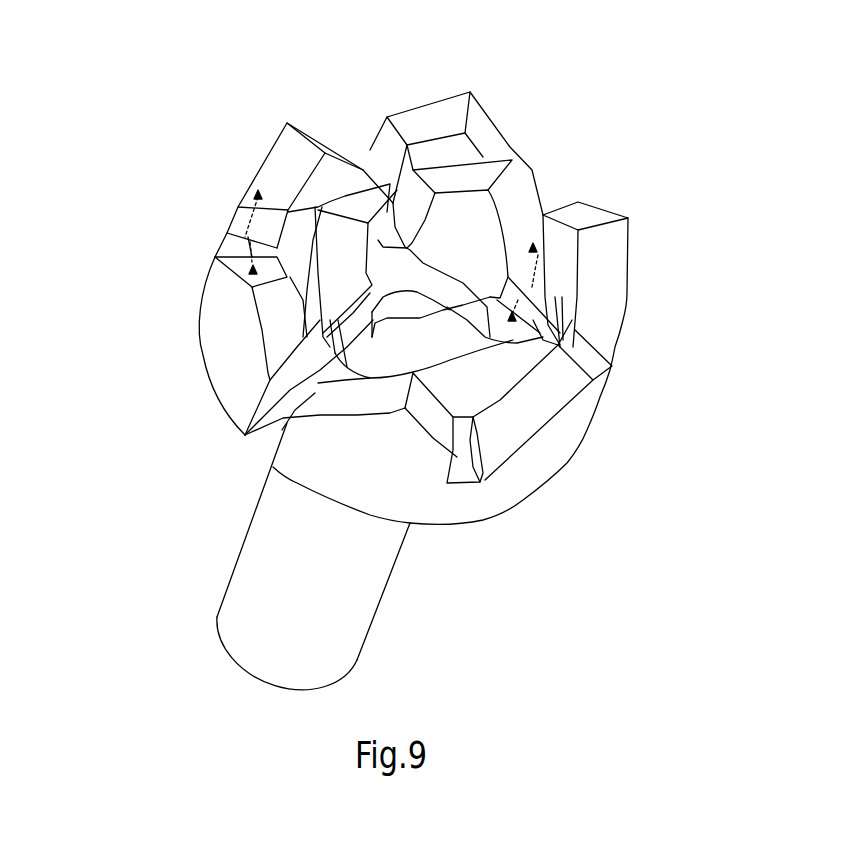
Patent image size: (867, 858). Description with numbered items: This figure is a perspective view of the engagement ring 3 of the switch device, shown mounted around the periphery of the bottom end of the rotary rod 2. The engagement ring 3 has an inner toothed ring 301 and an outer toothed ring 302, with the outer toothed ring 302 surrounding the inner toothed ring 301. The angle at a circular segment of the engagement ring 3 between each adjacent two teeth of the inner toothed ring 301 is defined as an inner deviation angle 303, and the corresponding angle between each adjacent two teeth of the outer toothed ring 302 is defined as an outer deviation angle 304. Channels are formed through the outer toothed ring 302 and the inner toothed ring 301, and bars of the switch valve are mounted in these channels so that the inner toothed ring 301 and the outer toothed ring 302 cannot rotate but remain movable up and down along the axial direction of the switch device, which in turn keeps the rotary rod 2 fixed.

The rotary rod 2 is at (245, 613).
The engagement ring 3 is at (407, 93).
The inner toothed ring 301 is at (510, 195).
The outer toothed ring 302 is at (278, 167).
The inner deviation angle 303 is at (528, 294).
The outer deviation angle 304 is at (270, 241).